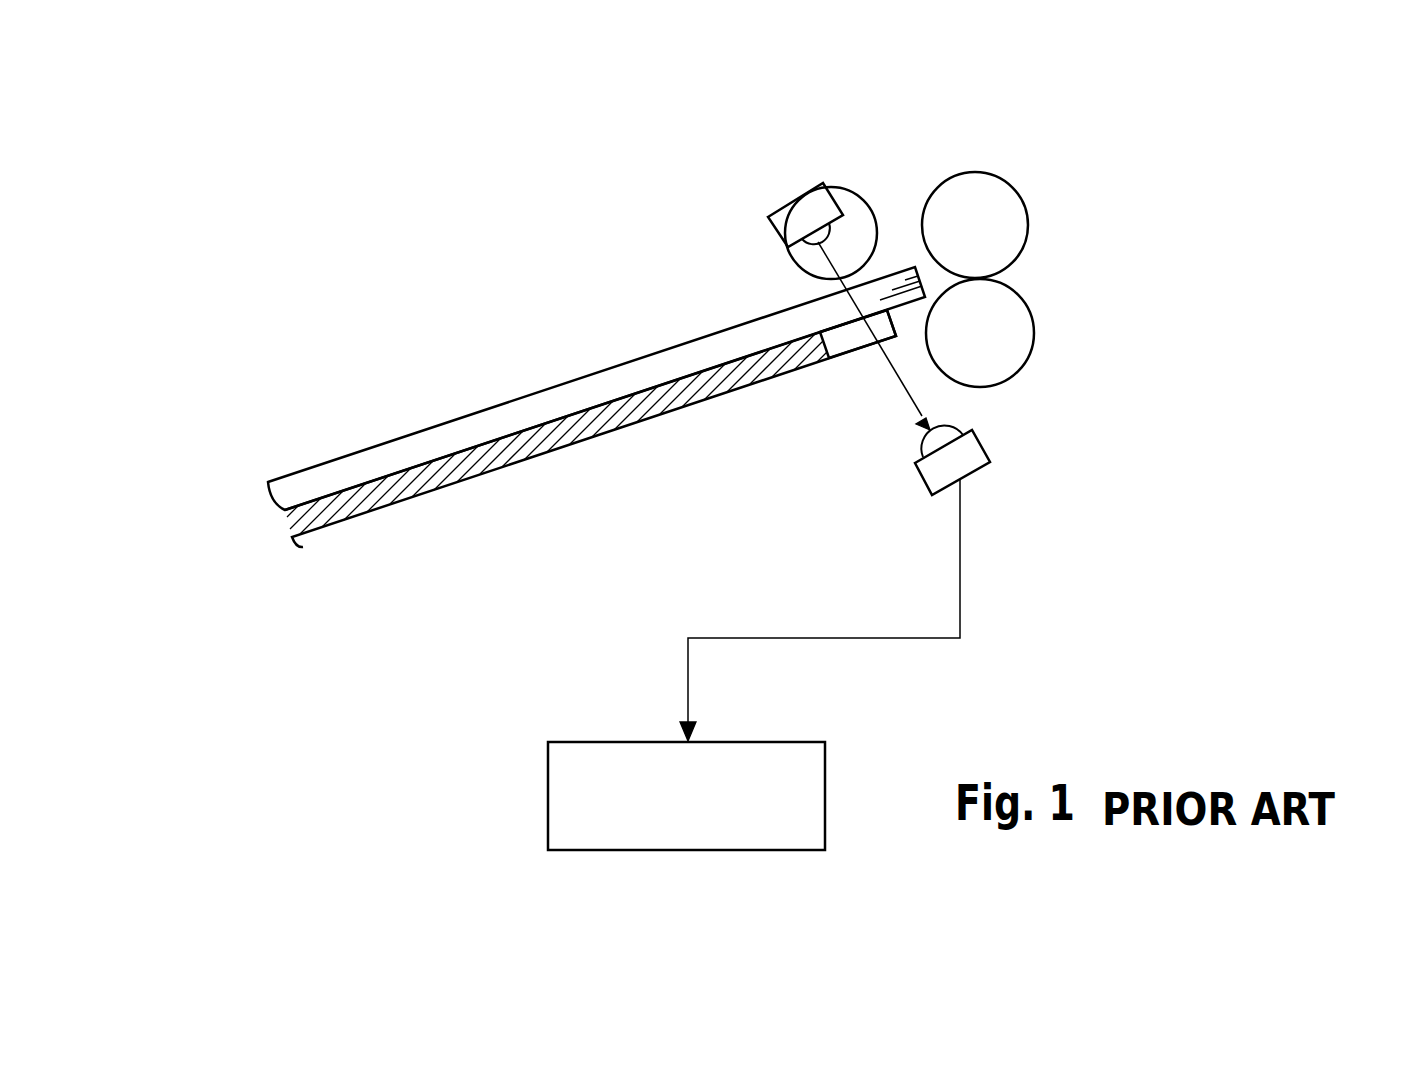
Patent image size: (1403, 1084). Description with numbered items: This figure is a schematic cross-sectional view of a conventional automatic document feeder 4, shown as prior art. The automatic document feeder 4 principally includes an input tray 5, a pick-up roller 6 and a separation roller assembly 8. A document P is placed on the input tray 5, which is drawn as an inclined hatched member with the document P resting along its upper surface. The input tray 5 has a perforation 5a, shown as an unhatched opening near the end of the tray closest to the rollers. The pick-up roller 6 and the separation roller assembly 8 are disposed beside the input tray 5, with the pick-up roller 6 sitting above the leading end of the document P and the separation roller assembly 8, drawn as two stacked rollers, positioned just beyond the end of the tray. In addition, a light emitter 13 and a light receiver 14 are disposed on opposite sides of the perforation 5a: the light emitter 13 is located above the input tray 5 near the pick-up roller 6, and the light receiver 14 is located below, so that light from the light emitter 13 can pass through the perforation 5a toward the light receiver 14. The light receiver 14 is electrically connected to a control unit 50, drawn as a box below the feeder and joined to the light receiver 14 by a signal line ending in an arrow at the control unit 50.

The automatic document feeder 4 is at (430, 232).
The document P is at (608, 368).
The input tray 5 is at (572, 445).
The perforation 5a is at (853, 342).
The pick-up roller 6 is at (842, 190).
The separation roller assembly 8 is at (1020, 157).
The light emitter 13 is at (798, 197).
The light receiver 14 is at (977, 473).
The control unit 50 is at (658, 835).